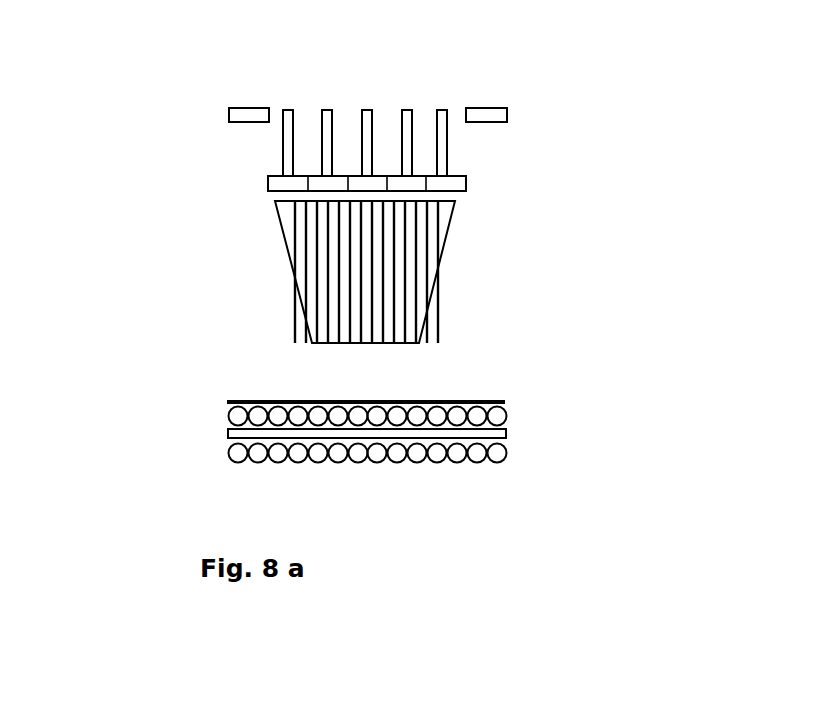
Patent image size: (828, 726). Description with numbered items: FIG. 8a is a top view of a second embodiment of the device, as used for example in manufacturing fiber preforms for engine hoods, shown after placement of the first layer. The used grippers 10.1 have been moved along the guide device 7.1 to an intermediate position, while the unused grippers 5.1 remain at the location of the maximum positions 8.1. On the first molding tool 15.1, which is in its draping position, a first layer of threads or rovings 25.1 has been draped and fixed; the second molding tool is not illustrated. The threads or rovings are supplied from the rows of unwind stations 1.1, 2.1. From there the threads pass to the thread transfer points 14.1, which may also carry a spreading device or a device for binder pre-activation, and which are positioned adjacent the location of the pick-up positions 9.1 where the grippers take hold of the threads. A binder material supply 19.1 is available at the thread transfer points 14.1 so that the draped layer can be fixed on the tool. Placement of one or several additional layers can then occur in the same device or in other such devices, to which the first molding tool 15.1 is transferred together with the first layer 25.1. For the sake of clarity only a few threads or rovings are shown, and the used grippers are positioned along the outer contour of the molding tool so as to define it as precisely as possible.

The row of unwind stations 1.1 is at (226, 415).
The row of unwind stations 2.1 is at (226, 452).
The row of grippers 5.1 is at (229, 112).
The guide device for grippers 7.1 is at (327, 110).
The location of the maximum positions 8.1 is at (568, 108).
The location of pick-up positions 9.1 is at (566, 385).
The grippers in intermediate positions 10.1 is at (268, 183).
The thread transfer points 14.1 is at (248, 400).
The first molding tool in draping position 15.1 is at (454, 208).
The binder material supply 19.1 is at (507, 435).
The first layer of threads or rovings 25.1 is at (418, 267).